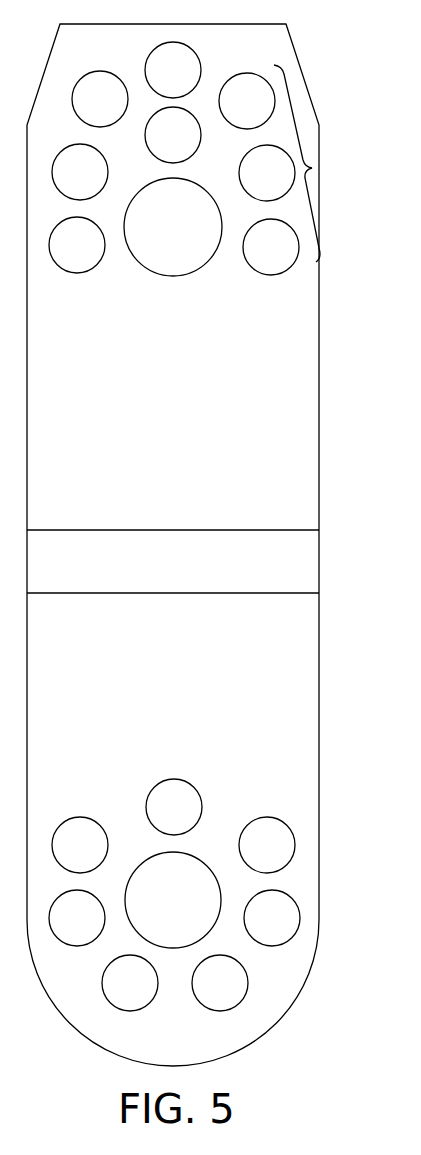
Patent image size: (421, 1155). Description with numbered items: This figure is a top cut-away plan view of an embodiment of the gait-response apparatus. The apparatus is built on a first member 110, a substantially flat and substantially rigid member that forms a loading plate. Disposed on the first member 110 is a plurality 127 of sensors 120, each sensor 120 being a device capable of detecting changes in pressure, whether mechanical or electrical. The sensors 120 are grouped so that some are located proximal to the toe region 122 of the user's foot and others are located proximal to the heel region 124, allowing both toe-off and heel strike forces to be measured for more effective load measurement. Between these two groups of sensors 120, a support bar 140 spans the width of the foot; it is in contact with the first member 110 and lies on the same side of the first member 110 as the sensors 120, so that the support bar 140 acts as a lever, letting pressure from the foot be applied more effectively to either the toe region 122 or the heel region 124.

The first member 110 is at (254, 422).
The sensors 120 is at (258, 102).
The toe region 122 is at (196, 240).
The heel region 124 is at (192, 906).
The plurality of sensors 127 is at (312, 168).
The support bar 140 is at (285, 570).